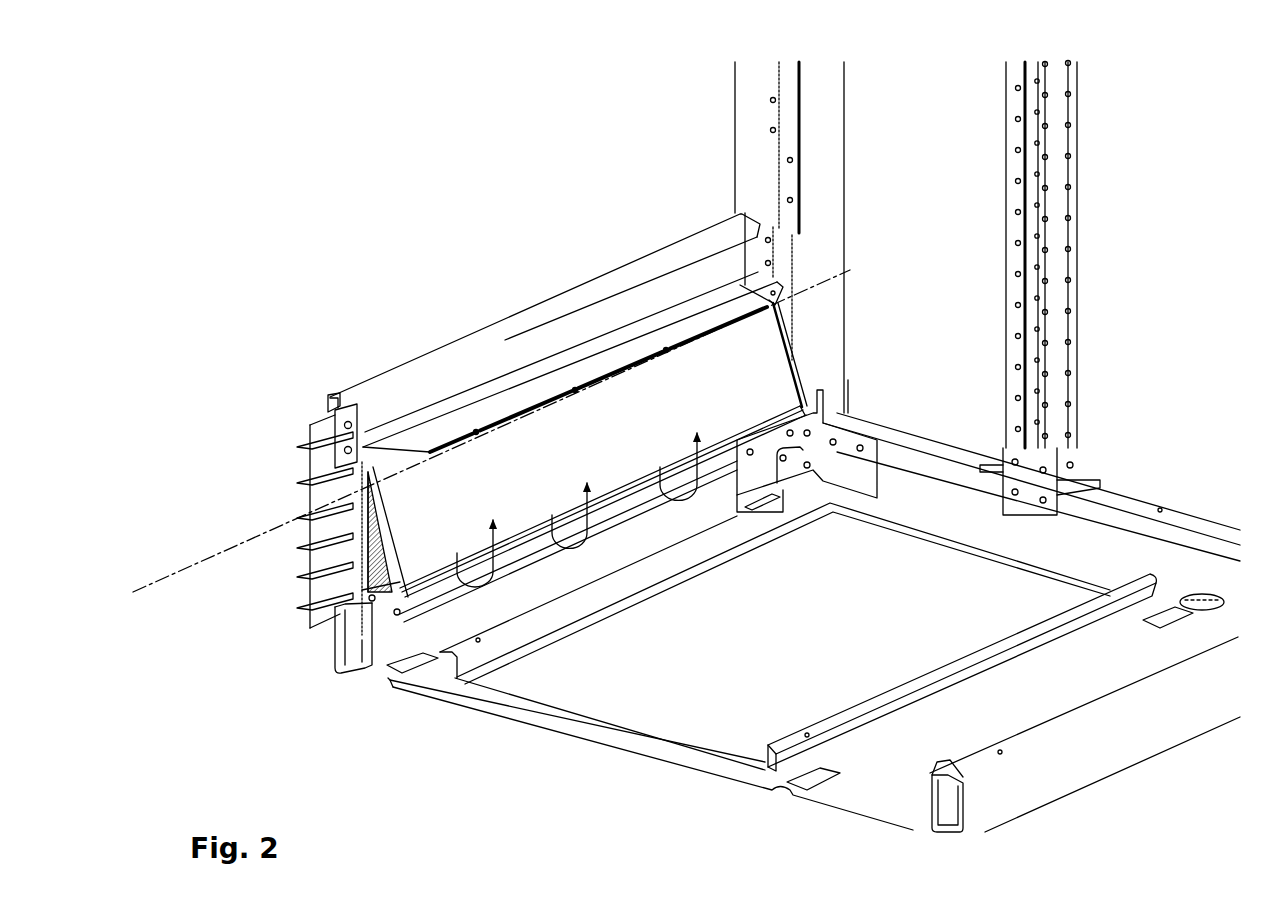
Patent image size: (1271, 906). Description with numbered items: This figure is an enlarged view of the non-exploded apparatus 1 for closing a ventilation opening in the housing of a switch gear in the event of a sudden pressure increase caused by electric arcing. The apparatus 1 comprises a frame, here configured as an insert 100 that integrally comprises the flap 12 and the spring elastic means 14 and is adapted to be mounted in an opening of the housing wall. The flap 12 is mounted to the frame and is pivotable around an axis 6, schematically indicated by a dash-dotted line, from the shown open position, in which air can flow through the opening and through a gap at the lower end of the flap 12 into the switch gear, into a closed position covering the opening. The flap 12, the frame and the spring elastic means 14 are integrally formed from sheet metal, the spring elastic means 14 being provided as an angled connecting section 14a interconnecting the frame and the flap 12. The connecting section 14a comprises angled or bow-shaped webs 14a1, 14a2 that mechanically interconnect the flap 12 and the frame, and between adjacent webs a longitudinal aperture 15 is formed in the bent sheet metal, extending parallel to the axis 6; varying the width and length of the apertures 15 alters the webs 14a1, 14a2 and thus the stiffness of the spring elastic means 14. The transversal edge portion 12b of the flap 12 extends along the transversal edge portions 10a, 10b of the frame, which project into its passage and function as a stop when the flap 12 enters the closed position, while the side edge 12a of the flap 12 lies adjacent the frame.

The apparatus 1 is at (325, 521).
The insert 100 is at (370, 462).
The axis of rotation 6 is at (220, 553).
The transversal edge portion of the frame 10a is at (803, 331).
The transversal edge portion of the frame 10b is at (532, 548).
The flap 12 is at (433, 510).
The flap side edge 12a is at (805, 373).
The transversal edge portion of the flap 12b is at (622, 478).
The spring elastic means 14 is at (660, 343).
The angled connecting section 14a is at (396, 449).
The angled web 14a1 is at (470, 438).
The angled web 14a2 is at (576, 389).
The longitudinal aperture 15 is at (520, 410).